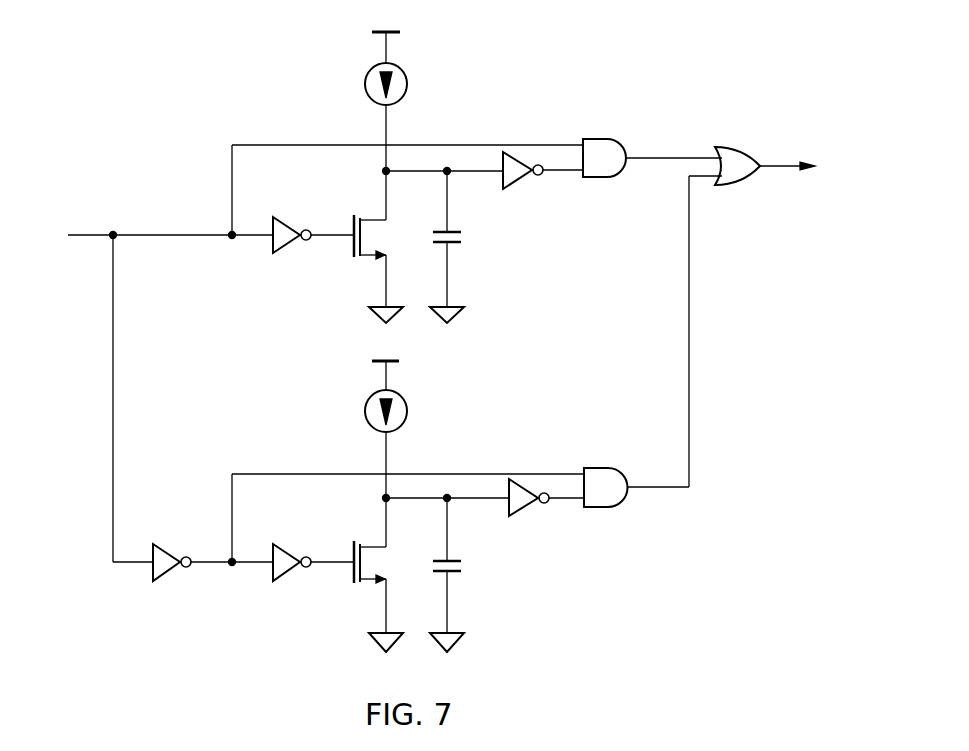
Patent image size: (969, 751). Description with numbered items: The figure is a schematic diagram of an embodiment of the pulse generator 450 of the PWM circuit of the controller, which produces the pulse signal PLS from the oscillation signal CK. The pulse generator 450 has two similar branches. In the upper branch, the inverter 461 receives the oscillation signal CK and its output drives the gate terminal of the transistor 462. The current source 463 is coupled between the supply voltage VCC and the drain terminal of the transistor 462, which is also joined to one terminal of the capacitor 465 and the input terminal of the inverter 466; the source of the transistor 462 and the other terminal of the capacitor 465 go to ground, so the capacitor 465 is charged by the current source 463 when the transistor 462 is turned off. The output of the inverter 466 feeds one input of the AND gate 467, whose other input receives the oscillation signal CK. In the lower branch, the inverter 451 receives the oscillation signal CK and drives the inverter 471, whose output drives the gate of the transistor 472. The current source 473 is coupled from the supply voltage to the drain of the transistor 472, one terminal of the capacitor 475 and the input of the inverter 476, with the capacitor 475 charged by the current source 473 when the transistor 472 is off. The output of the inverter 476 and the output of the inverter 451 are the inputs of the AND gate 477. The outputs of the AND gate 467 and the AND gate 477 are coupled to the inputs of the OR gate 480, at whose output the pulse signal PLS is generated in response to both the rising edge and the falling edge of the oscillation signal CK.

The pulse generator 450 is at (723, 45).
The inverter 451 is at (213, 551).
The inverter 461 is at (293, 227).
The transistor 462 is at (373, 258).
The current source 463 is at (366, 114).
The capacitor 465 is at (466, 247).
The inverter 466 is at (543, 182).
The AND gate 467 is at (652, 144).
The inverter 471 is at (313, 551).
The transistor 472 is at (373, 586).
The current source 473 is at (366, 440).
The capacitor 475 is at (467, 575).
The inverter 476 is at (546, 511).
The AND gate 477 is at (653, 341).
The OR gate 480 is at (782, 151).